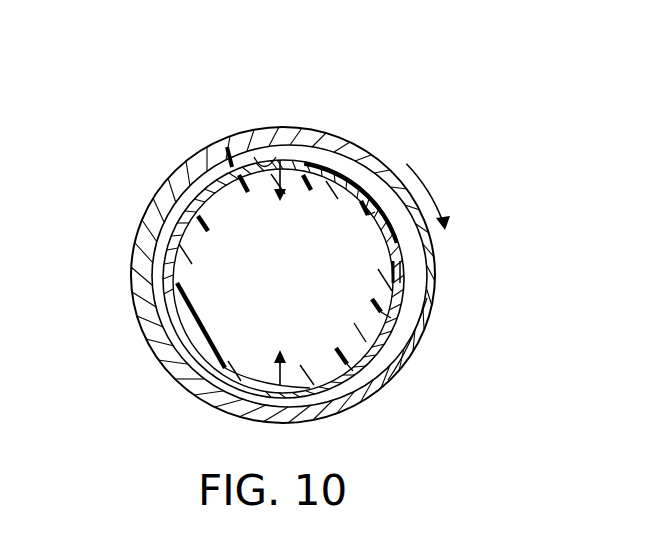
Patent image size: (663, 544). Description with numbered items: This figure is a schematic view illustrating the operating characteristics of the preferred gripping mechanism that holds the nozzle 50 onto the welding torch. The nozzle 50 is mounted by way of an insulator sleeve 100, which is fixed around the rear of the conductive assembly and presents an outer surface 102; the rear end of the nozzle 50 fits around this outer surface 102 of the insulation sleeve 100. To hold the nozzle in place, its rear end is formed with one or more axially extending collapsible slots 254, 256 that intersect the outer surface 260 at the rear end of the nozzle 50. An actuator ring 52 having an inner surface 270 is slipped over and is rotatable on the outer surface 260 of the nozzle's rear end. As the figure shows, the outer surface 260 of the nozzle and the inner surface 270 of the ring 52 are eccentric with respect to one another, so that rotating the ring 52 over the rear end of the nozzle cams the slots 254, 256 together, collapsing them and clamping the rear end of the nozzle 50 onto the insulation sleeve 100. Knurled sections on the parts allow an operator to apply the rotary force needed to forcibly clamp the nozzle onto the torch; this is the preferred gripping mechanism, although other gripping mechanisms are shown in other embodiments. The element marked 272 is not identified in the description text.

The nozzle 50 is at (228, 150).
The actuator ring 52 is at (353, 140).
The insulator sleeve 100 is at (316, 162).
The outer surface 102 is at (193, 187).
The collapsible slot 254 is at (160, 278).
The collapsible slot 256 is at (397, 272).
The outer surface 260 is at (388, 150).
The inner surface 270 is at (350, 370).
The fold 272 is at (273, 157).